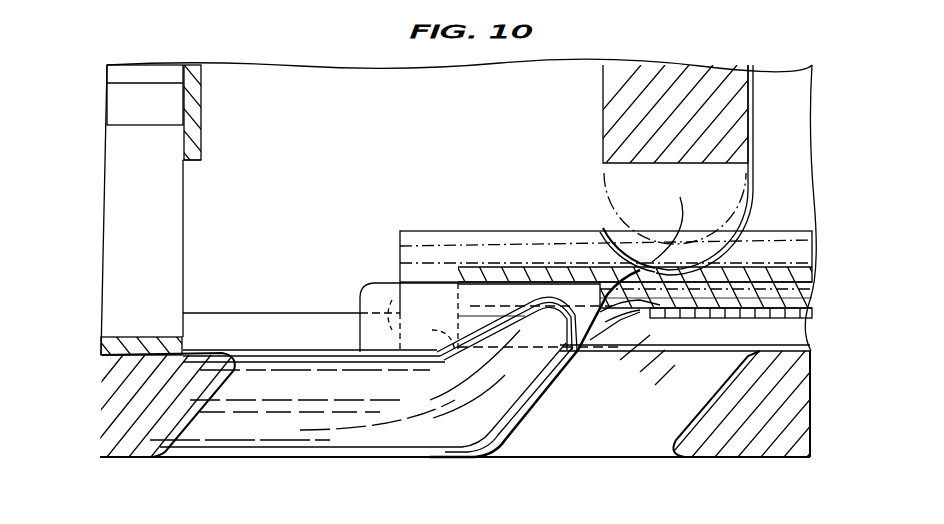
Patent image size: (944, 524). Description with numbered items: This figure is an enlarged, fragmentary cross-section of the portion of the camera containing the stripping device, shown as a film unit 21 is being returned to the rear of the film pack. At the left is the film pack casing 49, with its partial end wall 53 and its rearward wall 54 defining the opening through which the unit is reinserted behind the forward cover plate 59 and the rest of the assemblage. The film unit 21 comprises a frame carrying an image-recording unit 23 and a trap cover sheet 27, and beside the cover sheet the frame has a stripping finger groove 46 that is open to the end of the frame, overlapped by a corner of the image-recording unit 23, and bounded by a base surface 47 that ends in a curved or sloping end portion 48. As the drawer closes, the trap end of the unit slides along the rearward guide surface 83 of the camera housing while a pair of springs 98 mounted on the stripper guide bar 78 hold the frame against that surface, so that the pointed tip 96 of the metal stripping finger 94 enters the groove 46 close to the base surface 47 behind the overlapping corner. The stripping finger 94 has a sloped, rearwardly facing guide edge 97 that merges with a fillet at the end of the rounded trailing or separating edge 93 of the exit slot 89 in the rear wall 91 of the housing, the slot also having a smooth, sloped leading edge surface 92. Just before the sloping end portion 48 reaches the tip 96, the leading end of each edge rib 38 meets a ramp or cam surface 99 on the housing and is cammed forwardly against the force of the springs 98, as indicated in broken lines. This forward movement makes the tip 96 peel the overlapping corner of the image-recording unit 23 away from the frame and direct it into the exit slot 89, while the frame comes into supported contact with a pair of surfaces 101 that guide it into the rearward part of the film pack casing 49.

The film unit 21 is at (784, 265).
The image-recording unit 23 is at (602, 335).
The trap or collector cover sheet 27 is at (652, 322).
The edge ribs 38 is at (442, 350).
The stripping finger groove 46 is at (400, 258).
The base surface 47 is at (558, 280).
The curved or sloping end portion 48 is at (584, 258).
The film pack casing 49 is at (123, 203).
The partial end wall 53 is at (203, 127).
The rearward wall 54 is at (130, 337).
The forward cover plate 59 is at (152, 115).
The stripper guide bar 78 is at (603, 128).
The rearward guide surface 83 is at (812, 346).
The exit slot 89 is at (597, 430).
The rear wall 91 is at (135, 457).
The leading edge surface 92 is at (670, 440).
The trailing or separating edge 93 is at (357, 430).
The stripping finger 94 is at (489, 290).
The pointed tip 96 is at (578, 302).
The guide edge 97 is at (600, 348).
The springs 98 is at (648, 262).
The ramp or cam surface 99 is at (438, 352).
The surfaces 101 is at (230, 313).